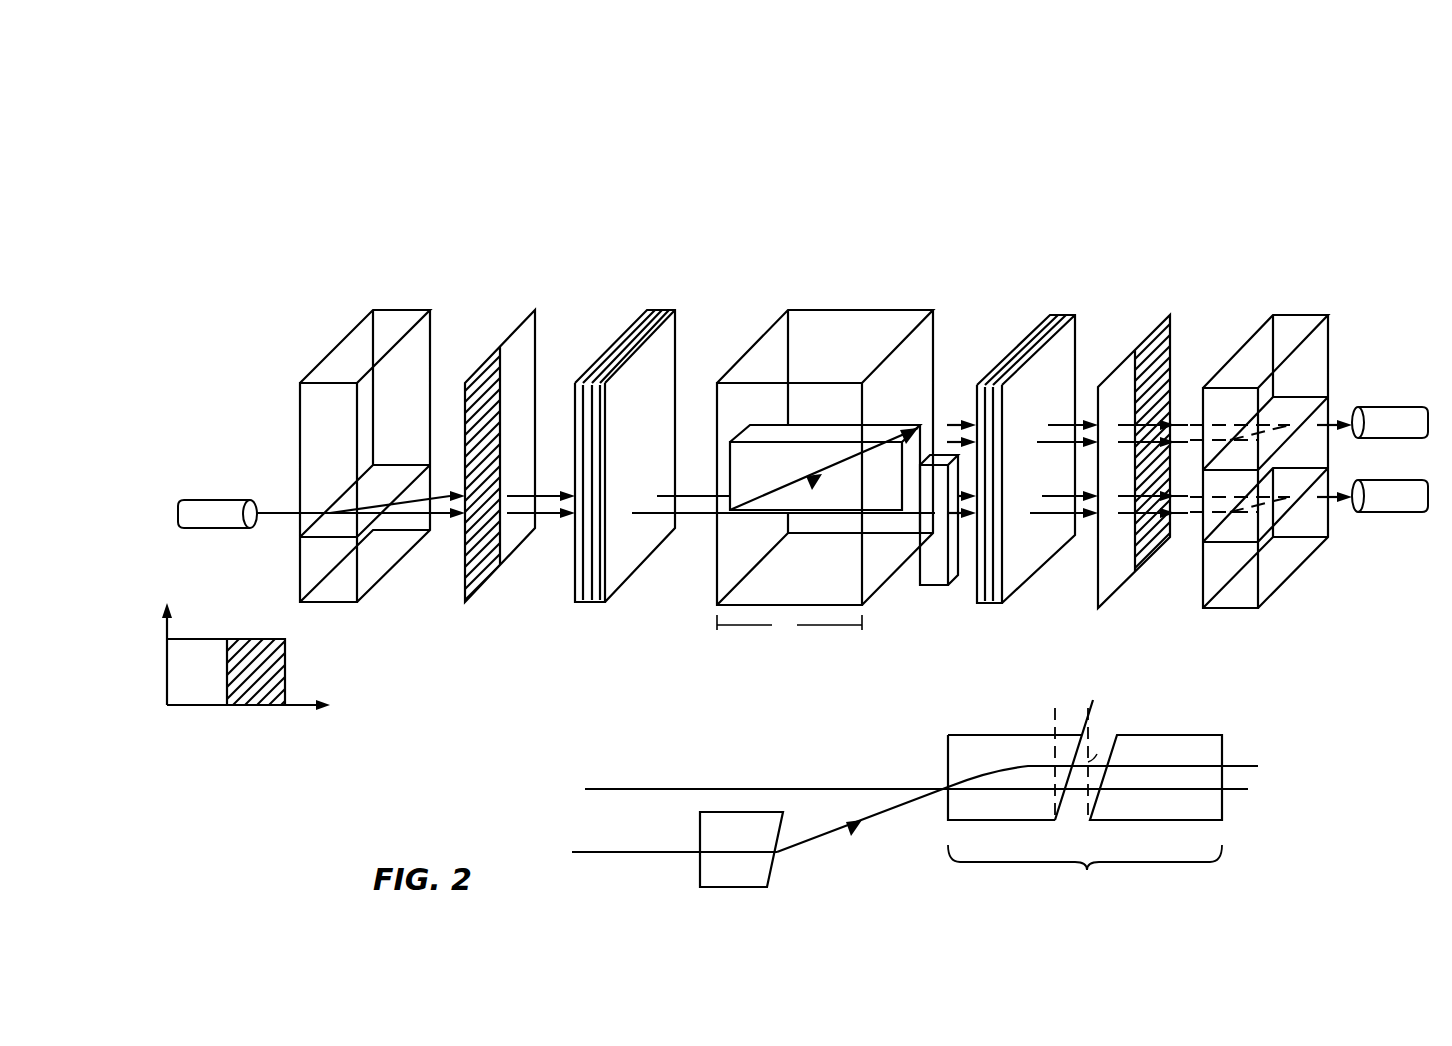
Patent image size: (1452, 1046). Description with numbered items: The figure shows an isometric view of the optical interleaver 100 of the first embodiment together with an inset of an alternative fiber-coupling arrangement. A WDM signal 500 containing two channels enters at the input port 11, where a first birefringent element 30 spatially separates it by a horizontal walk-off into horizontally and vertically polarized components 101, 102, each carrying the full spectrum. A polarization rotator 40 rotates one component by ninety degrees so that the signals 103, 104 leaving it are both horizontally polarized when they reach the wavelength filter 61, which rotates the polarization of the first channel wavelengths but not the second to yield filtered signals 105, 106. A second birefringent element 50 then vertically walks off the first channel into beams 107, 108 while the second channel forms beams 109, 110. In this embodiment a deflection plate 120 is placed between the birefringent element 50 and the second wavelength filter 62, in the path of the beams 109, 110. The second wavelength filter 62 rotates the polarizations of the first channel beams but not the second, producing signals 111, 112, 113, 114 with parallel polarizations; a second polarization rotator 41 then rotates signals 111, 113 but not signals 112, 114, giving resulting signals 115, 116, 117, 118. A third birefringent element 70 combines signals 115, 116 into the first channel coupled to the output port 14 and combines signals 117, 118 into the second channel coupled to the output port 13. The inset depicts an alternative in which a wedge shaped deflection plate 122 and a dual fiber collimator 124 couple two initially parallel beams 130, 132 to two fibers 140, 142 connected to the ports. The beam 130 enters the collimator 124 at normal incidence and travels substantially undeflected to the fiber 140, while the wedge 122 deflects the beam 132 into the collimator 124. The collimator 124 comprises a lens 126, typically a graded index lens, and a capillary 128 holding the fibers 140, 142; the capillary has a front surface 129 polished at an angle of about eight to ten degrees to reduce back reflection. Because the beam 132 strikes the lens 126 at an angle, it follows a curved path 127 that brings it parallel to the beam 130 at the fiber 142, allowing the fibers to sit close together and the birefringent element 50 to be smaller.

The optical interleaver 100 is at (530, 122).
The input port 11 is at (239, 464).
The first birefringent element 30 is at (393, 310).
The polarized component signal 101 is at (448, 507).
The polarized component signal 102 is at (445, 523).
The polarization rotator 40 is at (530, 347).
The signal exiting rotator 103 is at (553, 490).
The signal exiting rotator 104 is at (540, 523).
The wavelength filter 61 is at (675, 345).
The filtered signal 105 is at (657, 494).
The filtered signal 106 is at (690, 517).
The second birefringent element 50 is at (837, 327).
The first channel beam 107 is at (948, 423).
The first channel beam 108 is at (927, 437).
The second channel beam 109 is at (967, 503).
The second channel beam 110 is at (920, 530).
The deflection plate 120 is at (937, 587).
The second wavelength filter 62 is at (1043, 327).
The parallel-polarized signal 112 is at (1038, 368).
The parallel-polarized signal 111 is at (1085, 425).
The parallel-polarized signal 113 is at (1088, 512).
The parallel-polarized signal 114 is at (1050, 513).
The second polarization rotator 41 is at (1140, 372).
The resulting signal 115 is at (1193, 425).
The resulting signal 116 is at (1228, 437).
The resulting signal 117 is at (1197, 500).
The resulting signal 118 is at (1180, 513).
The third birefringent element 70 is at (1297, 325).
The output port 14 is at (1137, 763).
The output port 13 is at (1133, 805).
The WDM signal 500 is at (233, 671).
The beam 130 is at (600, 789).
The beam 132 is at (600, 852).
The wedge shaped deflection plate 122 is at (773, 867).
The curved path 127 is at (960, 778).
The lens 126 is at (988, 735).
The capillary 128 is at (1147, 735).
The front surface 129 is at (1087, 803).
The optical fiber 142 is at (1233, 766).
The optical fiber 140 is at (1247, 790).
The dual fiber collimator 124 is at (1085, 877).